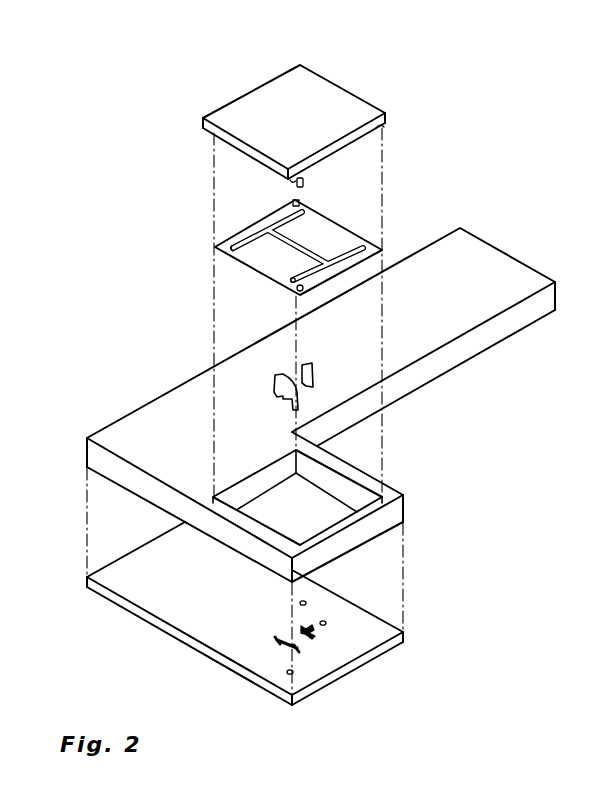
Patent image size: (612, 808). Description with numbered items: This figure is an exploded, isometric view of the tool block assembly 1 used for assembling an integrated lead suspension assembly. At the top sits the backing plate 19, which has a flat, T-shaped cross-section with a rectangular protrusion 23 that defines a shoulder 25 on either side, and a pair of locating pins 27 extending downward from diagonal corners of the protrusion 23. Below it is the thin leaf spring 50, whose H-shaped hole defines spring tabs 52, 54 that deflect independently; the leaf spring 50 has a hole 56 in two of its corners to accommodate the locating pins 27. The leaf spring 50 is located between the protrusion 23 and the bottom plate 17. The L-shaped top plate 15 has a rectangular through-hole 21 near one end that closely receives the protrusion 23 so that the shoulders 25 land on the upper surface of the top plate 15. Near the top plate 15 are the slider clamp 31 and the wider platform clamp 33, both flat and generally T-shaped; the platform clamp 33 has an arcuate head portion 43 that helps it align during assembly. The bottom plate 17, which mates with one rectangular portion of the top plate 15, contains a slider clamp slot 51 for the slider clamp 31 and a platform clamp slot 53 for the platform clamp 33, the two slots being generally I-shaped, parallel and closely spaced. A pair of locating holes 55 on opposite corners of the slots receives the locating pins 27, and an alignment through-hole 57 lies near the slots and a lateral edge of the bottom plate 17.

The tool block assembly 1 is at (176, 340).
The top plate 15 is at (487, 287).
The bottom plate 17 is at (385, 650).
The backing plate 19 is at (312, 83).
The through-hole 21 is at (354, 498).
The protrusion 23 is at (342, 162).
The shoulder 25 is at (386, 131).
The locating pins 27 is at (305, 184).
The slider clamp 31 is at (315, 380).
The platform clamp 33 is at (300, 400).
The arcuate head portion 43 is at (604, 145).
The leaf spring 50 is at (381, 249).
The slider clamp slot 51 is at (302, 628).
The spring tab 52 is at (320, 238).
The platform clamp slot 53 is at (280, 640).
The spring tab 54 is at (286, 252).
The locating holes 55 is at (310, 602).
The hole 56 is at (292, 203).
The alignment through-hole 57 is at (327, 625).